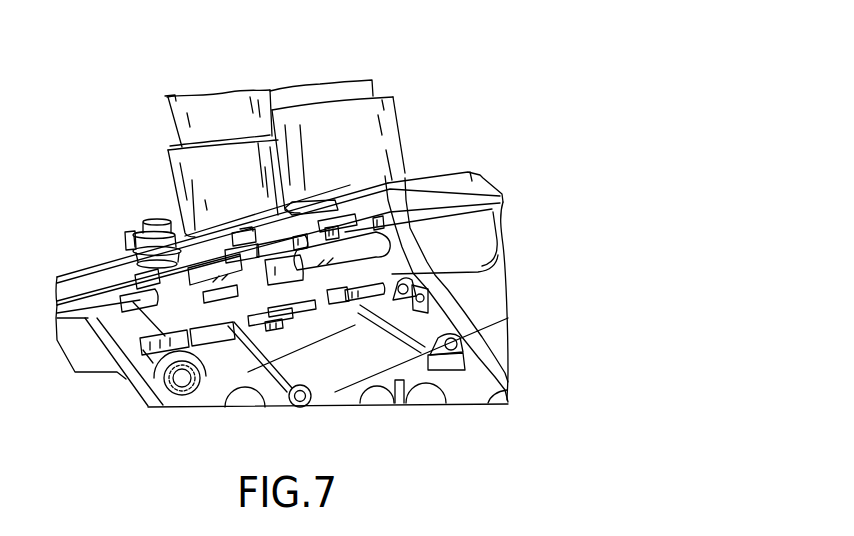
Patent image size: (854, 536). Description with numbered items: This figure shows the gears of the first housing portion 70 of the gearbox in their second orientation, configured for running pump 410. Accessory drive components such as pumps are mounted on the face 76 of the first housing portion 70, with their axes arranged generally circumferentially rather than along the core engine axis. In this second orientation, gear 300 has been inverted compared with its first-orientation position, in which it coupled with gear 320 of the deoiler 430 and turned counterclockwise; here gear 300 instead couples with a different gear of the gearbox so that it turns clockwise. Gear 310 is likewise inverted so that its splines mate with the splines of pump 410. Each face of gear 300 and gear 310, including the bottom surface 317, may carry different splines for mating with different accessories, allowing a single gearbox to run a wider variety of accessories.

The pump 410 is at (195, 162).
The deoiler 430 is at (142, 220).
The face 76 is at (83, 268).
The first housing portion 70 is at (440, 173).
The gear 320 is at (150, 312).
The gear 300 is at (240, 283).
The bottom surface 317 is at (390, 250).
The gear 310 is at (373, 263).